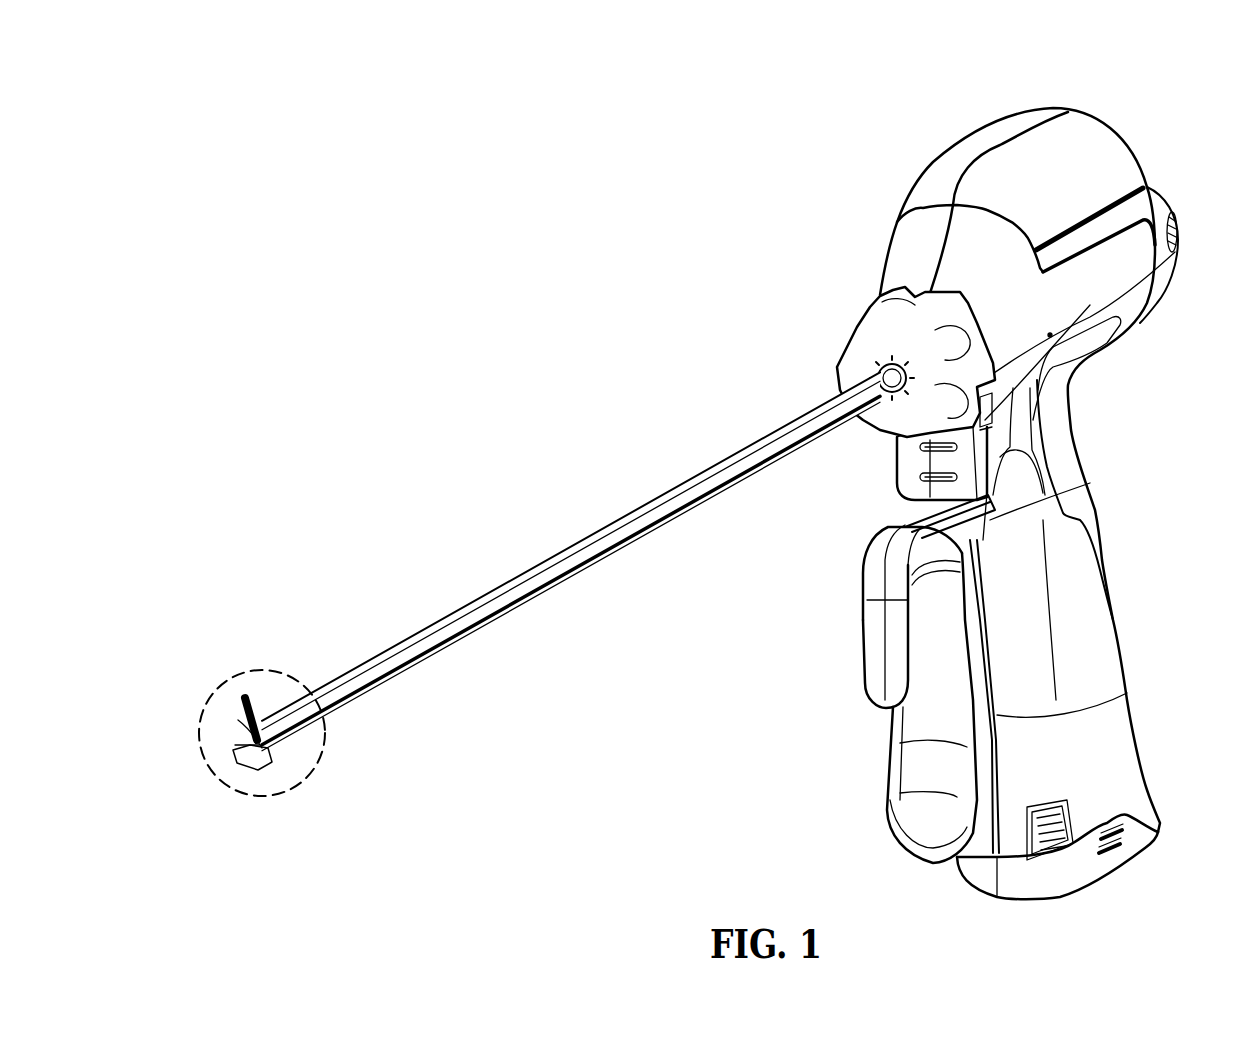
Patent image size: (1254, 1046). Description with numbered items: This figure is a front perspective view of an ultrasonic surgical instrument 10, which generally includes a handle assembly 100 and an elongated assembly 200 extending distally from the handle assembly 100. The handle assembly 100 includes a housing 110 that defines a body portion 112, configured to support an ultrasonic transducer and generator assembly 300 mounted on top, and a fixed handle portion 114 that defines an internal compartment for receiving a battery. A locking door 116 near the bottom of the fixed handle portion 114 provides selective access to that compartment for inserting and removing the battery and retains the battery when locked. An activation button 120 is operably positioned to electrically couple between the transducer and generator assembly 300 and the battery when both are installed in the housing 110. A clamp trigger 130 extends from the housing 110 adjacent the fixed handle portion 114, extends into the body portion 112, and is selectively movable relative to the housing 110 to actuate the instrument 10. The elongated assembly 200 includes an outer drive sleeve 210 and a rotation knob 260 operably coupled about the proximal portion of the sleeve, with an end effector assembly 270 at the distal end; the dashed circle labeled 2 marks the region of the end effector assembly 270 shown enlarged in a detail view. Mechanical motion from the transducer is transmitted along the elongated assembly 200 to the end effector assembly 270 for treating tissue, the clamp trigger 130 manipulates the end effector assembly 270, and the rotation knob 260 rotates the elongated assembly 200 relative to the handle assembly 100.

The ultrasonic surgical instrument 10 is at (584, 356).
The handle assembly 100 is at (1045, 93).
The housing 110 is at (1144, 336).
The body portion 112 is at (1142, 235).
The fixed handle portion 114 is at (1093, 647).
The locking door 116 is at (1100, 873).
The activation button 120 is at (907, 483).
The clamp trigger 130 is at (928, 770).
The elongated assembly 200 is at (619, 482).
The outer drive sleeve 210 is at (577, 571).
The rotation knob 260 is at (873, 323).
The end effector assembly 270 is at (257, 767).
The ultrasonic transducer and generator assembly 300 is at (1118, 172).
The detail region of FIG. 2 is at (282, 670).